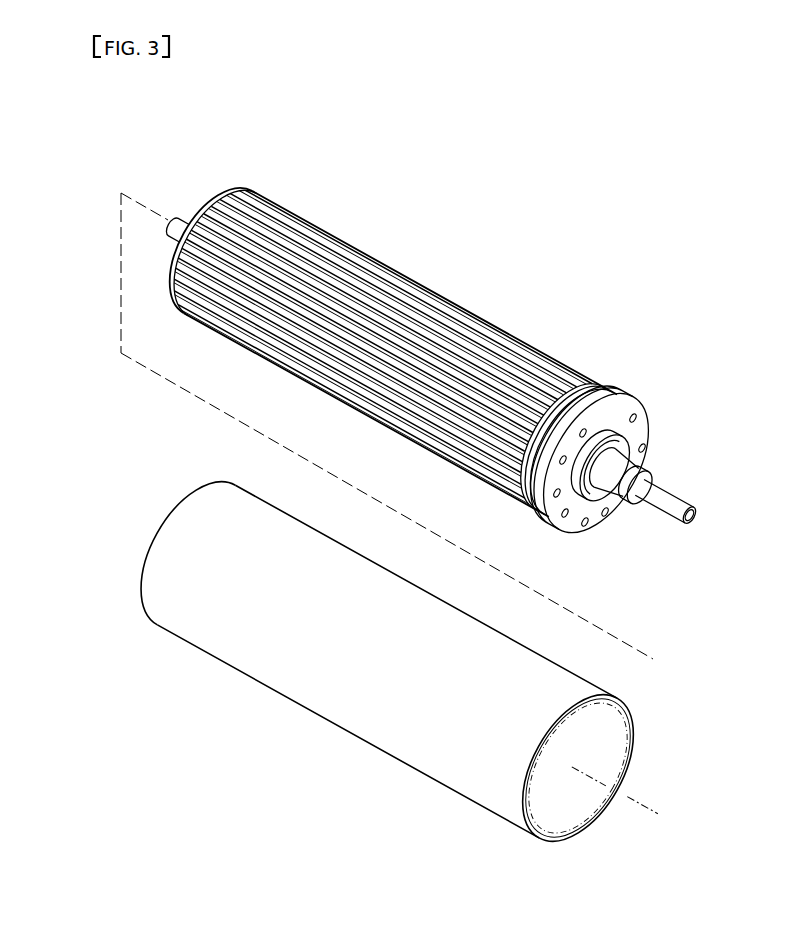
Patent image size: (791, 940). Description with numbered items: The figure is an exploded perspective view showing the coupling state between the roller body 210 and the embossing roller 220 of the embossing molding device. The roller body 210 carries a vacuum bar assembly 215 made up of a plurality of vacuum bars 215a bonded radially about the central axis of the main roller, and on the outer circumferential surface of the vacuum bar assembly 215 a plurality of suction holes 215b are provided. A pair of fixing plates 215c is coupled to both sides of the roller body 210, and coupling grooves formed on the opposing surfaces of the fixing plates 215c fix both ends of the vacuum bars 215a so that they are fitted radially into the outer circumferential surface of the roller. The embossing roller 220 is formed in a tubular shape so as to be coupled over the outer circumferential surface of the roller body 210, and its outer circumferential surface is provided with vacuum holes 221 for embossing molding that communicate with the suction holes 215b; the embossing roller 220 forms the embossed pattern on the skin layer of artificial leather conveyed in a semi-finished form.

The roller body 210 is at (430, 346).
The vacuum bar assembly 215 is at (383, 344).
The vacuum bar 215a is at (374, 338).
The suction hole 215b is at (374, 342).
The fixing plate 215c is at (575, 317).
The embossing roller 220 is at (403, 666).
The vacuum hole 221 is at (302, 702).